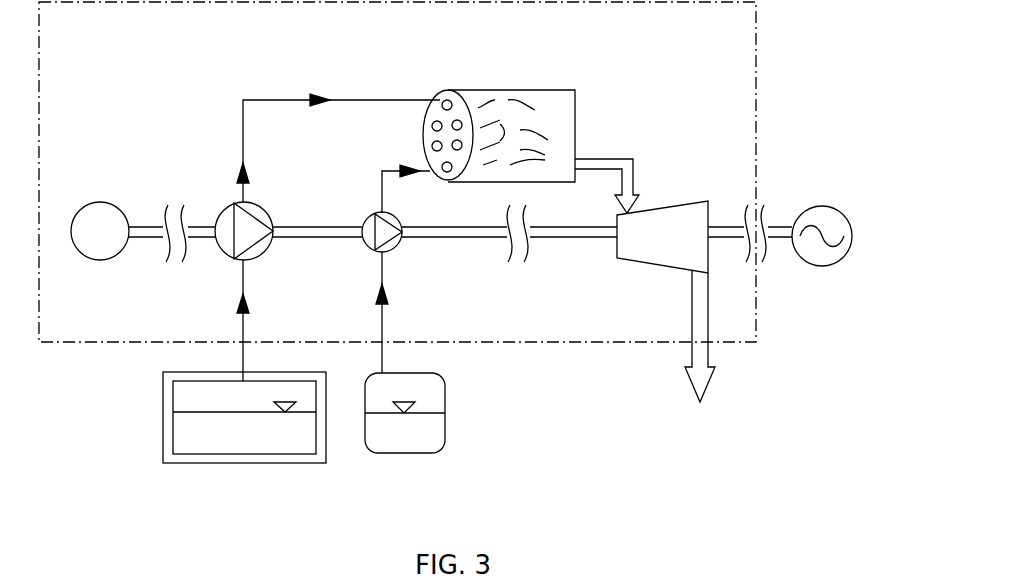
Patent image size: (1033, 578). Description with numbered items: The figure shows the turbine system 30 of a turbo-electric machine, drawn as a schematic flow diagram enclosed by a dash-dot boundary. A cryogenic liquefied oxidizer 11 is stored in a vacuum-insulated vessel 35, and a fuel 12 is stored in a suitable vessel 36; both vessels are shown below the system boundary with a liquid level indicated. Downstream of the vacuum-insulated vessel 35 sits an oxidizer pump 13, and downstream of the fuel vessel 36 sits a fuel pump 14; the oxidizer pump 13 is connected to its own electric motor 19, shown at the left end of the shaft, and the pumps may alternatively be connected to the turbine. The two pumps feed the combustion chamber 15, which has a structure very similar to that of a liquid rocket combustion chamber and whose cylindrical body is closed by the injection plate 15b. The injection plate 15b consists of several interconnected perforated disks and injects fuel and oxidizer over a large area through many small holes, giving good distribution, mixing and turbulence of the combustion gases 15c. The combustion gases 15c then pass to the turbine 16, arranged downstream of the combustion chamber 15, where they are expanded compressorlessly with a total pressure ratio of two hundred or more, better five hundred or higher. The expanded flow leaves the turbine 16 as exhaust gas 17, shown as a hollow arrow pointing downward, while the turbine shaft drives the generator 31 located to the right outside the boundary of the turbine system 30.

The oxidizer 11 is at (190, 432).
The fuel 12 is at (415, 428).
The oxidizer pump 13 is at (217, 252).
The fuel pump 14 is at (397, 248).
The combustion chamber 15 is at (501, 99).
The injection plate 15b is at (440, 92).
The combustion gases 15c is at (530, 98).
The turbine 16 is at (686, 201).
The exhaust gas 17 is at (702, 353).
The electric motor for pump(s) 19 is at (100, 202).
The turbine system 30 is at (757, 40).
The generator 31 is at (826, 206).
The vessel for oxidizer 35 is at (214, 445).
The vessel for fuel 36 is at (441, 441).